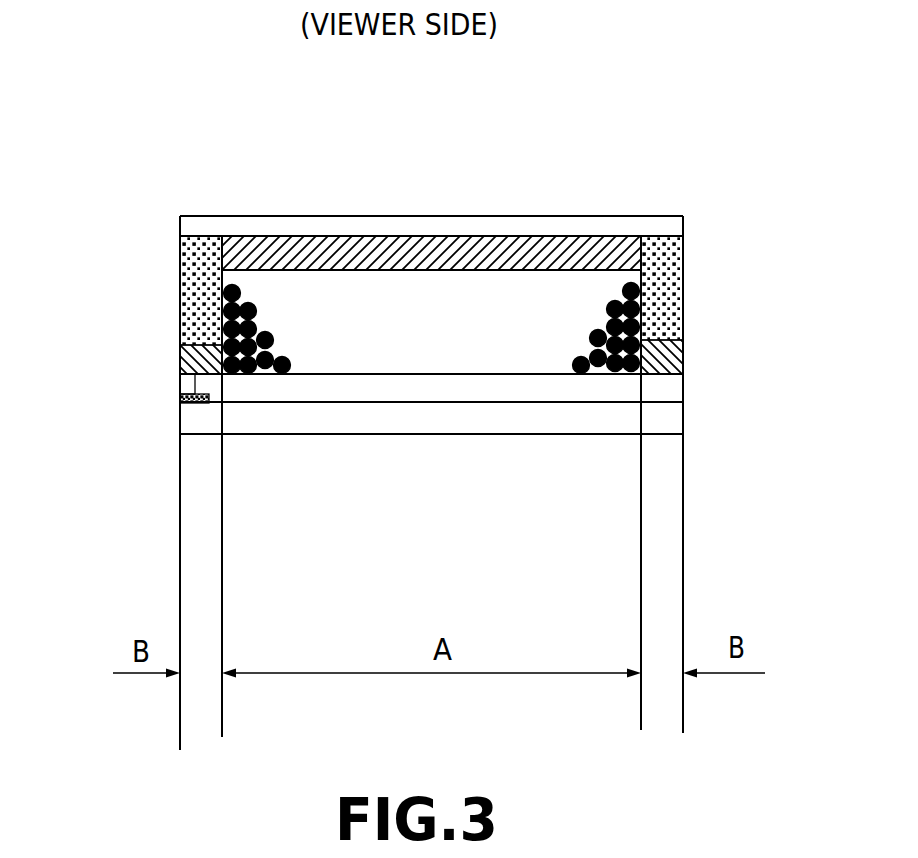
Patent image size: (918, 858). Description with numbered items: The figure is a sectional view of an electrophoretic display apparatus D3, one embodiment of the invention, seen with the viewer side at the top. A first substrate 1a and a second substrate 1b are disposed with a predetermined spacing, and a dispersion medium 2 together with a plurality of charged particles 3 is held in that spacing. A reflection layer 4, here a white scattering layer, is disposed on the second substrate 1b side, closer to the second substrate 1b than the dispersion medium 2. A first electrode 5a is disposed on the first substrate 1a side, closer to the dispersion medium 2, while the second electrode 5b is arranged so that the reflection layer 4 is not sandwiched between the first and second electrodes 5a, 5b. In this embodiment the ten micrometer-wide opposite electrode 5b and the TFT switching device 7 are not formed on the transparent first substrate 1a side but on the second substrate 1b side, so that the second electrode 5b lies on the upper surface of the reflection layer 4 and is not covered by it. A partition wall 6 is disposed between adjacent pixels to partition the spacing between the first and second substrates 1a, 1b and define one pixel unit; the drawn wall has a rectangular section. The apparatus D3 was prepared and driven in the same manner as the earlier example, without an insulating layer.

The first substrate 1a is at (414, 223).
The second substrate 1b is at (500, 415).
The dispersion medium 2 is at (442, 339).
The charged particles 3 is at (243, 374).
The reflection layer 4 is at (582, 383).
The first electrode 5a is at (267, 243).
The second electrode 5b is at (180, 362).
The partition wall 6 is at (668, 288).
The switching device 7 is at (180, 398).
The electrophoretic display apparatus D3 is at (710, 138).